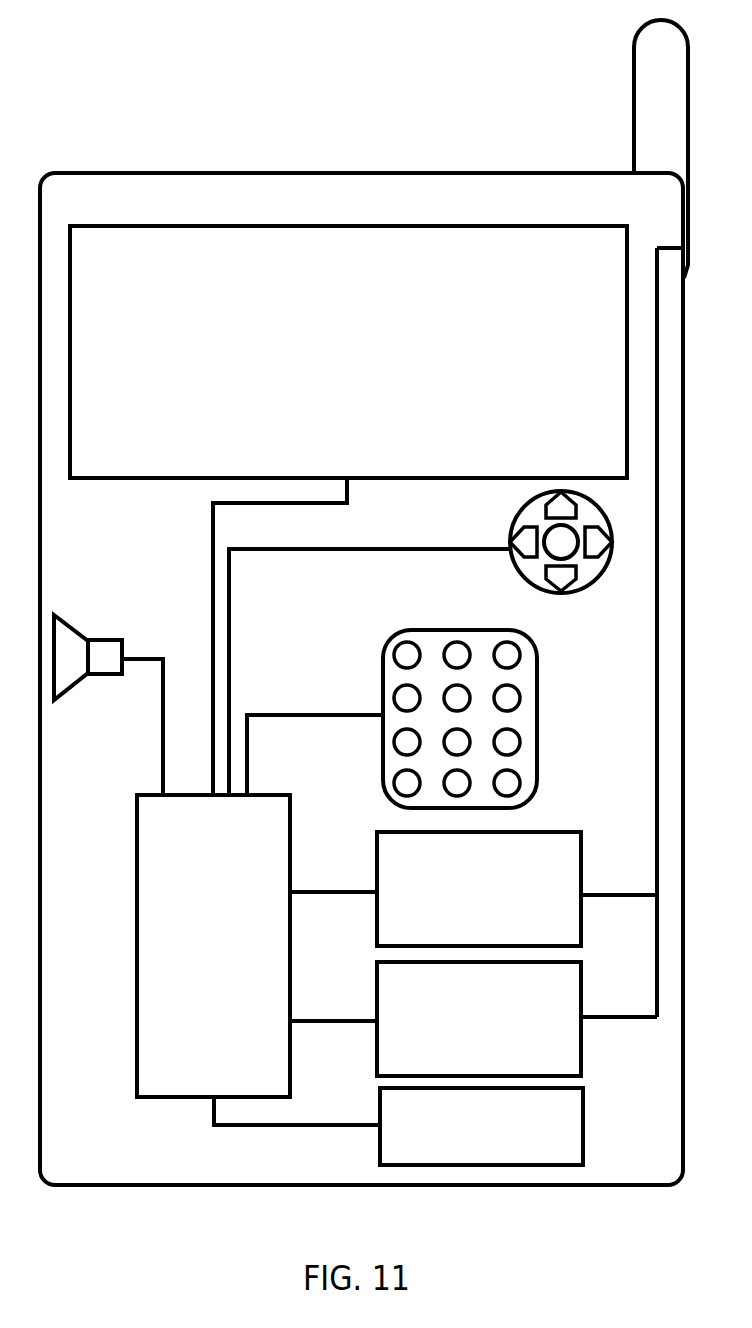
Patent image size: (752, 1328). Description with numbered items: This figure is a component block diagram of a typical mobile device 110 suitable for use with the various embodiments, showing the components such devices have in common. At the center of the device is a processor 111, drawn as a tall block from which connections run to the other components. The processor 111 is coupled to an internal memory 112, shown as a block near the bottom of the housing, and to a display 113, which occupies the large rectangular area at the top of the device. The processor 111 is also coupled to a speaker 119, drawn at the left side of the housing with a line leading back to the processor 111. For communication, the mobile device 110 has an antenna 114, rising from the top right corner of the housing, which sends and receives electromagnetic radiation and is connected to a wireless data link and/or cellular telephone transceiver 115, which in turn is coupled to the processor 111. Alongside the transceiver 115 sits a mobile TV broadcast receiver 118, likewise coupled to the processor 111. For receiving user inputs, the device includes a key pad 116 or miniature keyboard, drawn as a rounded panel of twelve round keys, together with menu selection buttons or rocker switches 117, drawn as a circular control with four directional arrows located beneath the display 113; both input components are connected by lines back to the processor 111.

The mobile device 110 is at (305, 171).
The processor 111 is at (236, 955).
The internal memory 112 is at (500, 1136).
The display 113 is at (351, 352).
The antenna 114 is at (634, 52).
The cellular telephone transceiver 115 is at (498, 898).
The key pad 116 is at (537, 714).
The rocker switches 117 is at (563, 591).
The mobile TV broadcast receiver 118 is at (498, 1029).
The speaker 119 is at (124, 648).